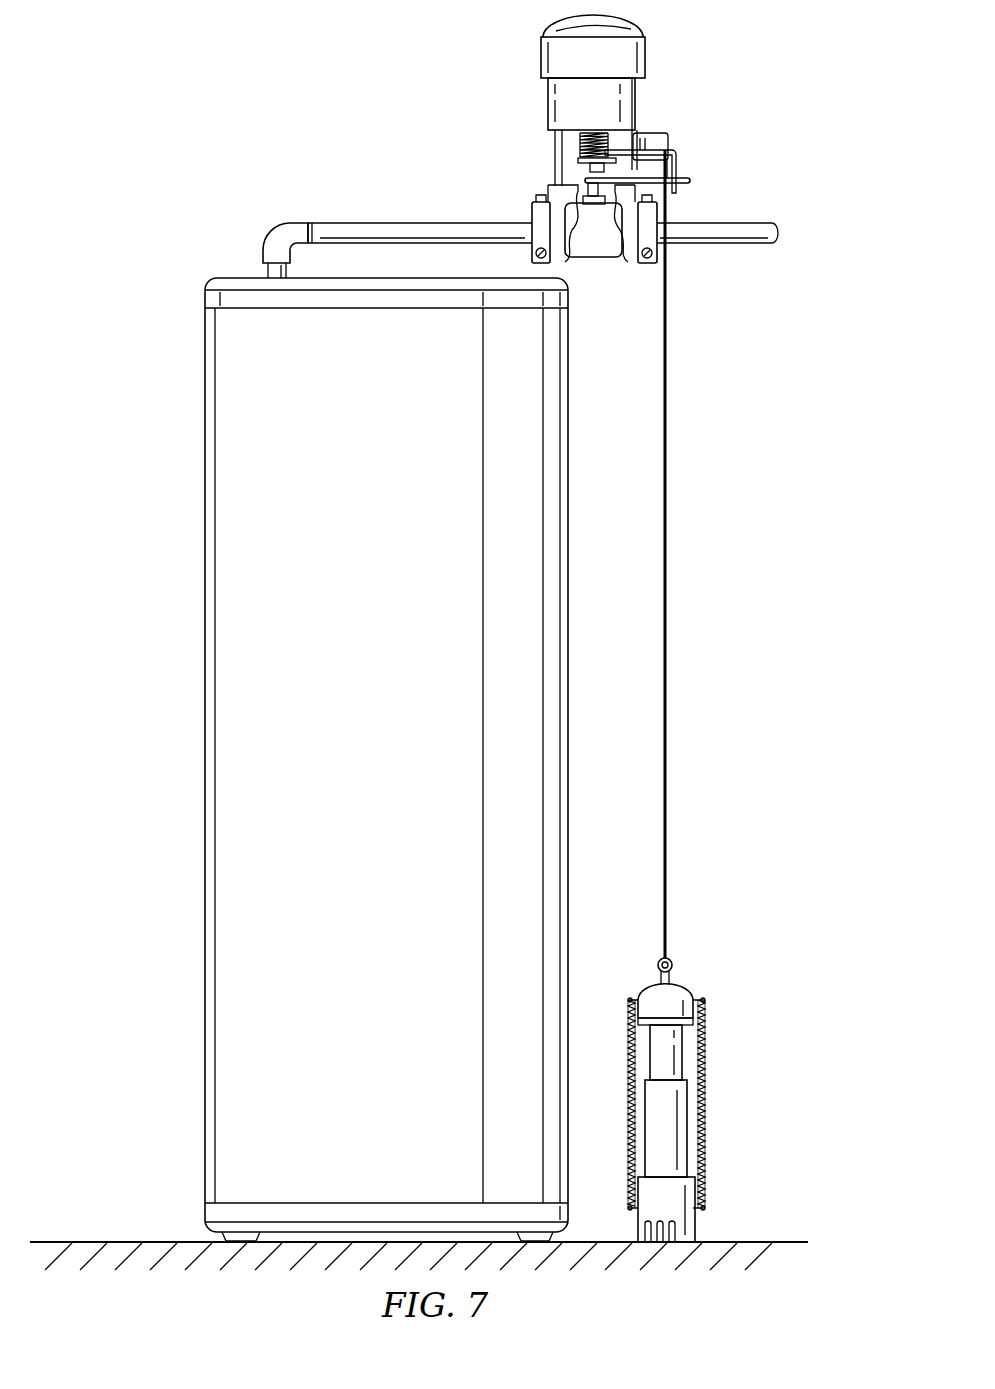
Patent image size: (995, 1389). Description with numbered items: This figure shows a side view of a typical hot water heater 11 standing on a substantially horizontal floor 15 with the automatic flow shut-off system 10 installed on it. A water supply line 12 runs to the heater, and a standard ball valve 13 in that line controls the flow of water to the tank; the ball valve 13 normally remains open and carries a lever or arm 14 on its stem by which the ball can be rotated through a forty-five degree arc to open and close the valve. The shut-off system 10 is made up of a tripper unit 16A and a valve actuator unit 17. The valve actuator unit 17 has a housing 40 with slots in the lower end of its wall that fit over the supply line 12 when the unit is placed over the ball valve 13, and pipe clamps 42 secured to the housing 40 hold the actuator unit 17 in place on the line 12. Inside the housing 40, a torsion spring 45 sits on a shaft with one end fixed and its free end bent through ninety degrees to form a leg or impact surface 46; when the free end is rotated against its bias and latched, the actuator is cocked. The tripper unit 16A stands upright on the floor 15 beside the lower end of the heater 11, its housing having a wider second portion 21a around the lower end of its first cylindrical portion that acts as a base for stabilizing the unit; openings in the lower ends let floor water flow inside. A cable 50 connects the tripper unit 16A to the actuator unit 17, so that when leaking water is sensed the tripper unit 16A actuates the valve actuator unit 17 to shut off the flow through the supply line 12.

The automatic flow shut-off system 10 is at (804, 518).
The hot water heater 11 is at (400, 767).
The water supply line 12 is at (405, 223).
The ball valve 13 is at (608, 244).
The lever or arm 14 is at (690, 181).
The floor 15 is at (113, 1241).
The tripper unit 16A is at (746, 1104).
The valve actuator unit 17 is at (703, 112).
The second portion 21a is at (697, 1222).
The housing 40 is at (548, 102).
The pipe clamps 42 is at (532, 214).
The torsion spring 45 is at (580, 143).
The leg or impact surface 46 is at (680, 165).
The cable / pull rod 50 is at (667, 466).